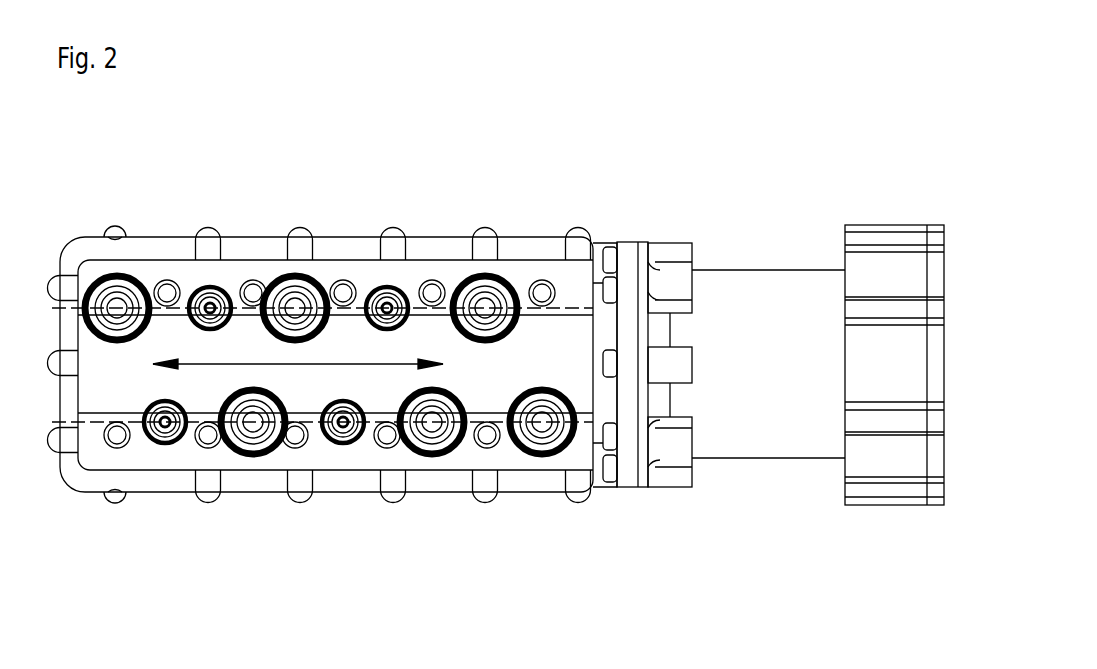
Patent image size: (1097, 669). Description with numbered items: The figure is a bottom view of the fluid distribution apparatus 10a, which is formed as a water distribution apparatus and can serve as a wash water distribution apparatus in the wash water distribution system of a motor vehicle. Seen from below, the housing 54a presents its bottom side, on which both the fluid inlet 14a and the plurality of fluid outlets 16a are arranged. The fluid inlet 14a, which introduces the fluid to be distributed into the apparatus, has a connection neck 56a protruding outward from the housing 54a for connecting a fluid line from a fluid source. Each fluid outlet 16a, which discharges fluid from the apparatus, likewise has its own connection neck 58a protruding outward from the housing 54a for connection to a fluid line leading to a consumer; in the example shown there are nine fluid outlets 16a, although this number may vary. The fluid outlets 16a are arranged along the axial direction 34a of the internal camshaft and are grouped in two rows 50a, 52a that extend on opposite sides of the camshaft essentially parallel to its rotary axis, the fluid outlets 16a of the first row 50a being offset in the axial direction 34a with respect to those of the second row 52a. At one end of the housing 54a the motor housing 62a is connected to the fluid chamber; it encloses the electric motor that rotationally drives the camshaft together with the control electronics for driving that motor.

The fluid distribution apparatus 10a is at (618, 197).
The fluid inlet 14a is at (122, 302).
The fluid outlet 16a is at (432, 423).
The axial direction 34a is at (345, 363).
The row 50a is at (570, 307).
The row 52a is at (85, 423).
The housing 54a is at (208, 387).
The connection neck 56a is at (117, 308).
The connection neck 58a is at (432, 422).
The motor housing 62a is at (757, 318).